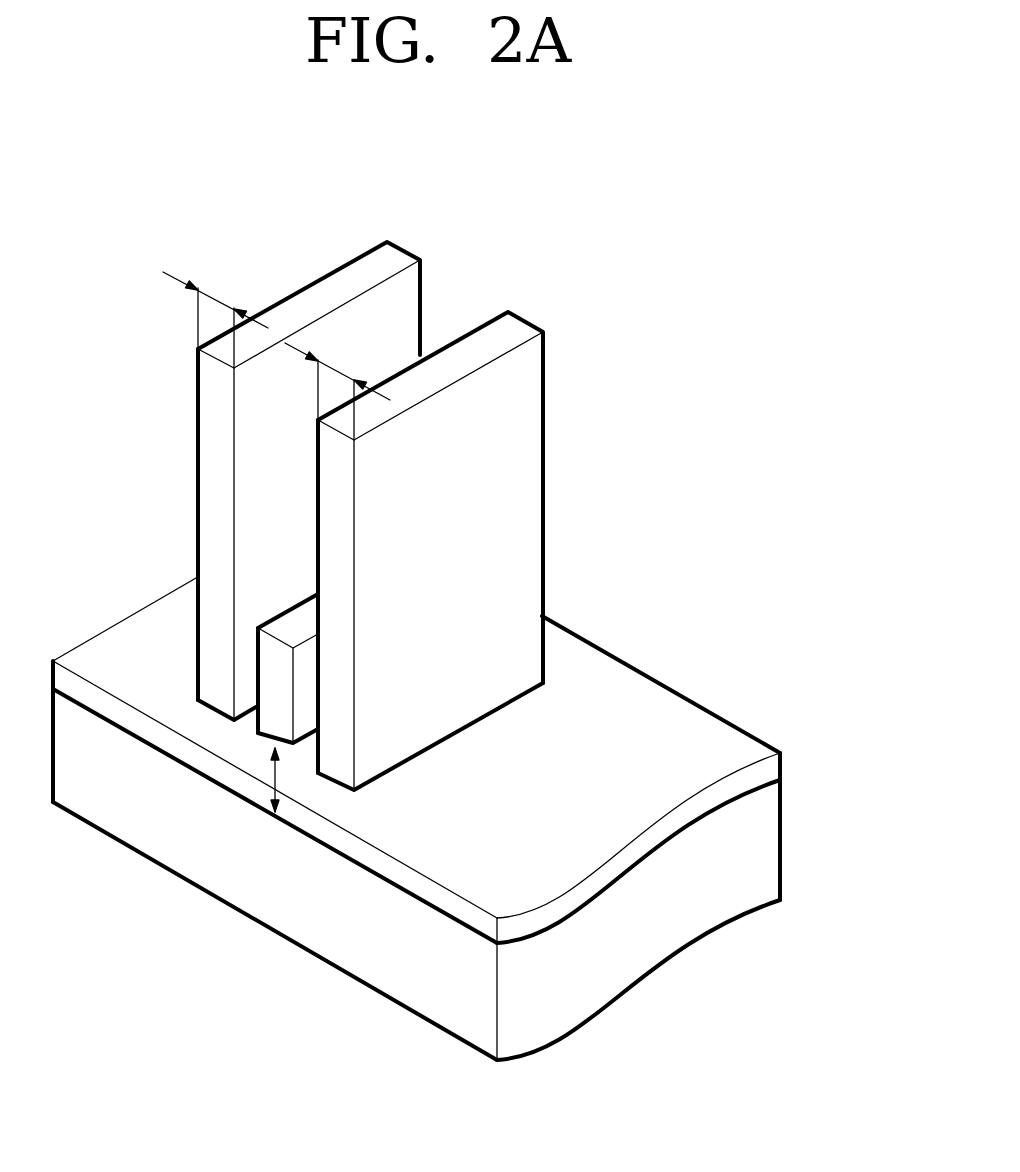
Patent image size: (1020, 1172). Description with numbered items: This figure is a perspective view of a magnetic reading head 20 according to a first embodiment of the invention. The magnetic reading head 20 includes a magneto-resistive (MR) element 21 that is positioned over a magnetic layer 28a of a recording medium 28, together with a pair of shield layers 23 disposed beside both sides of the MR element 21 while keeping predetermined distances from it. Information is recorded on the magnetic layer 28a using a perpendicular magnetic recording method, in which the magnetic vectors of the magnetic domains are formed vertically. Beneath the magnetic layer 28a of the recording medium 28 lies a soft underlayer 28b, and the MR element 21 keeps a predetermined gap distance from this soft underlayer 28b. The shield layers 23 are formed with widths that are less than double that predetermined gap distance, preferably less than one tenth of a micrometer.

The magnetic reading head 20 is at (404, 509).
The magneto-resistive (MR) element 21 is at (270, 662).
The shield layers 23 is at (497, 333).
The recording medium 28 is at (470, 819).
The magnetic layer 28a is at (767, 773).
The soft underlayer 28b is at (765, 848).